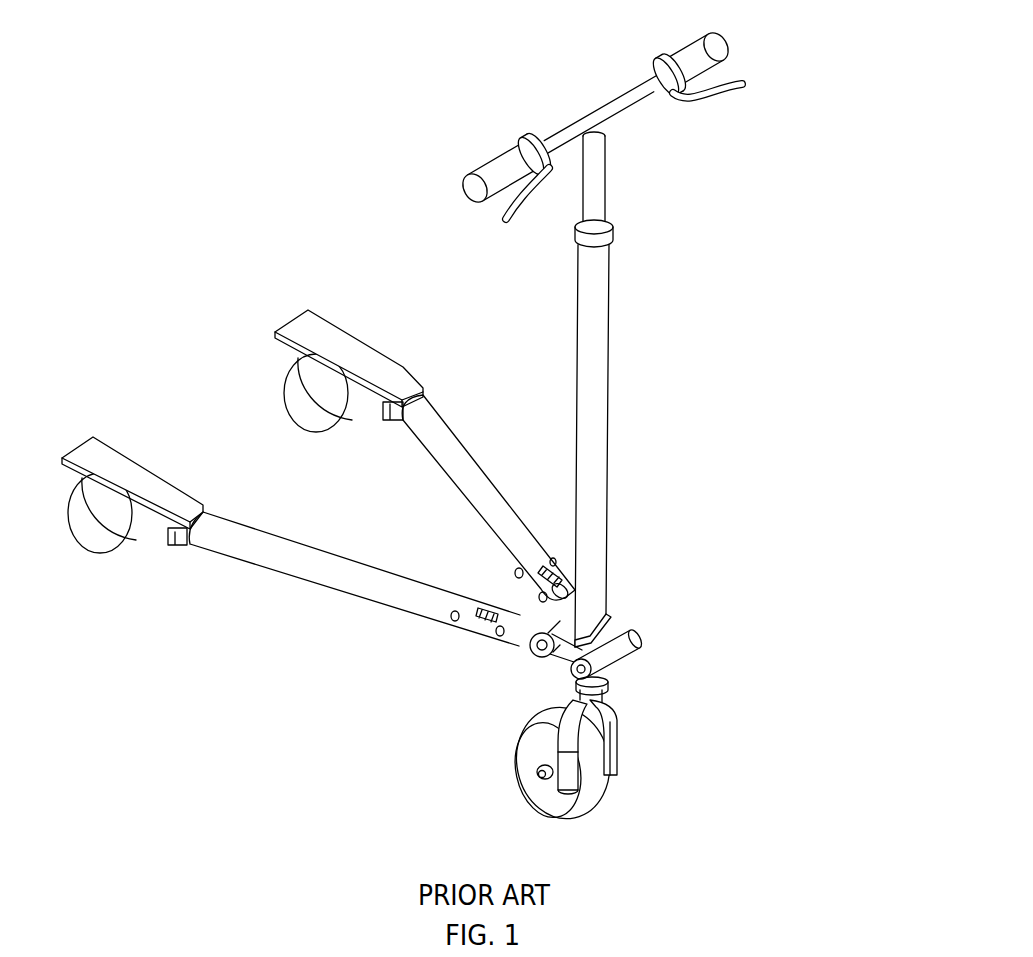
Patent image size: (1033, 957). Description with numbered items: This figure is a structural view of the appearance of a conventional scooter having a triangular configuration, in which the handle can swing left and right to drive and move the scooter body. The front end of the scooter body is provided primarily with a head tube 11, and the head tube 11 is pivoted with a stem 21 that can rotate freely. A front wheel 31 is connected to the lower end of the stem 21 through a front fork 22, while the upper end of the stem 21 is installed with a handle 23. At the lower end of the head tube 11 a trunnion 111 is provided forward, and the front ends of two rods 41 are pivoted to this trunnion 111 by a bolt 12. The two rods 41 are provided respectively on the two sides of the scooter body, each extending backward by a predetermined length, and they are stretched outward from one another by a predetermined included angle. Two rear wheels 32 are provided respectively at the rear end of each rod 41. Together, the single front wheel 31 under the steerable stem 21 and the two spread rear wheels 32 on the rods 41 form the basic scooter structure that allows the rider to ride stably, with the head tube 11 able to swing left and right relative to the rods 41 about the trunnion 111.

The head tube 11 is at (595, 410).
The trunnion 111 is at (607, 600).
The bolt 12 is at (545, 725).
The stem 21 is at (597, 187).
The front fork 22 is at (617, 717).
The handle 23 is at (613, 100).
The front wheel 31 is at (565, 815).
The rear wheel 32 is at (100, 537).
The rod 41 is at (285, 565).